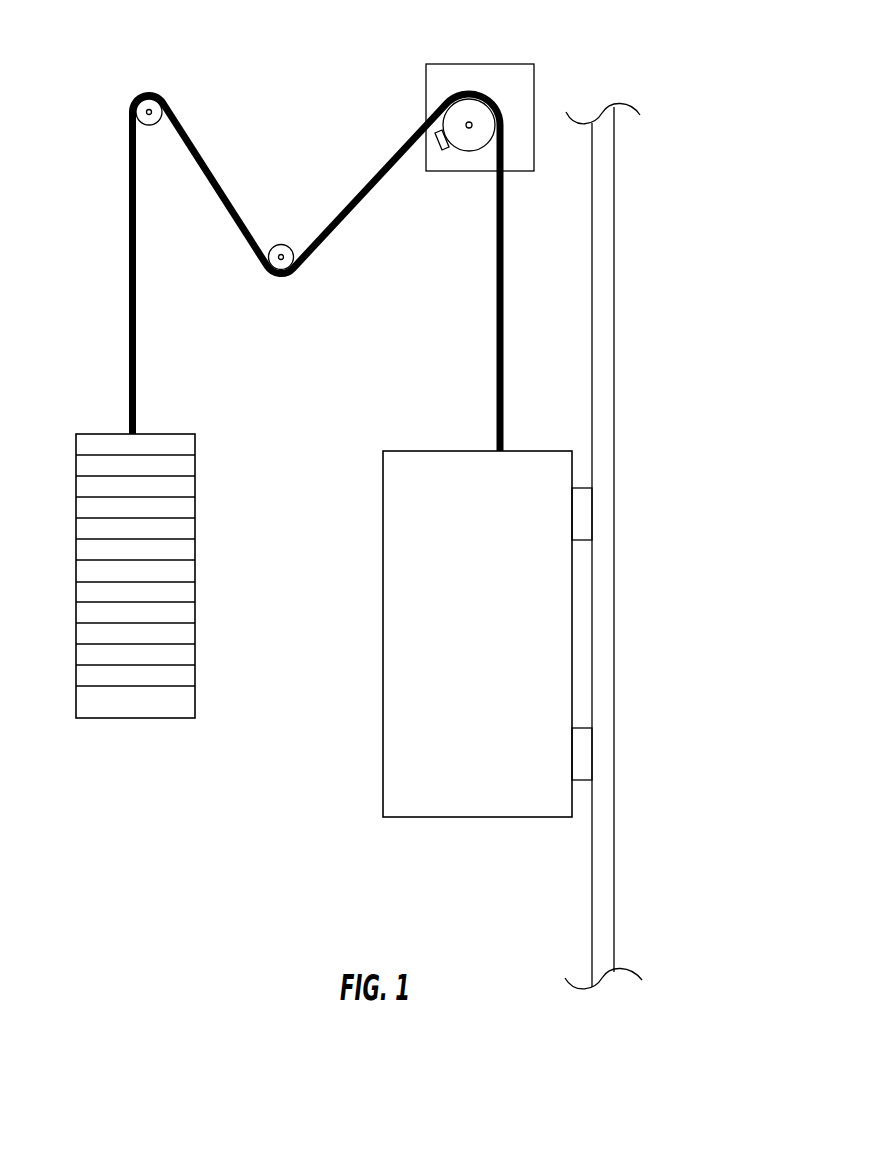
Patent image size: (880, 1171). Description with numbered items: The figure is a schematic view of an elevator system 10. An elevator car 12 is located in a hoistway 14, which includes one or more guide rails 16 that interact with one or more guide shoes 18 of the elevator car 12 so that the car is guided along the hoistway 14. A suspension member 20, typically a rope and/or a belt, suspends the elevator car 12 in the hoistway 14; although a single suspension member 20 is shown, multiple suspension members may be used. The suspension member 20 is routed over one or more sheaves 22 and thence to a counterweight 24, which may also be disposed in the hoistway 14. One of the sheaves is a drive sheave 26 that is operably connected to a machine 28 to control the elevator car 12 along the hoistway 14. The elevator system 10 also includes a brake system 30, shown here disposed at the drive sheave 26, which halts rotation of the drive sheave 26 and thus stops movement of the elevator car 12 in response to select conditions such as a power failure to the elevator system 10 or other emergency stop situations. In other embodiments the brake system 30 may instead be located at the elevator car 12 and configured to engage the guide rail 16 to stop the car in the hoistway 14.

The elevator system 10 is at (720, 198).
The elevator car 12 is at (490, 646).
The hoistway 14 is at (305, 713).
The guide rail 16 is at (602, 293).
The guide shoe 18 is at (592, 515).
The suspension member 20 is at (129, 253).
The sheave 22 is at (160, 117).
The counterweight 24 is at (195, 610).
The drive sheave 26 is at (468, 140).
The machine 28 is at (511, 78).
The brake system 30 is at (442, 147).